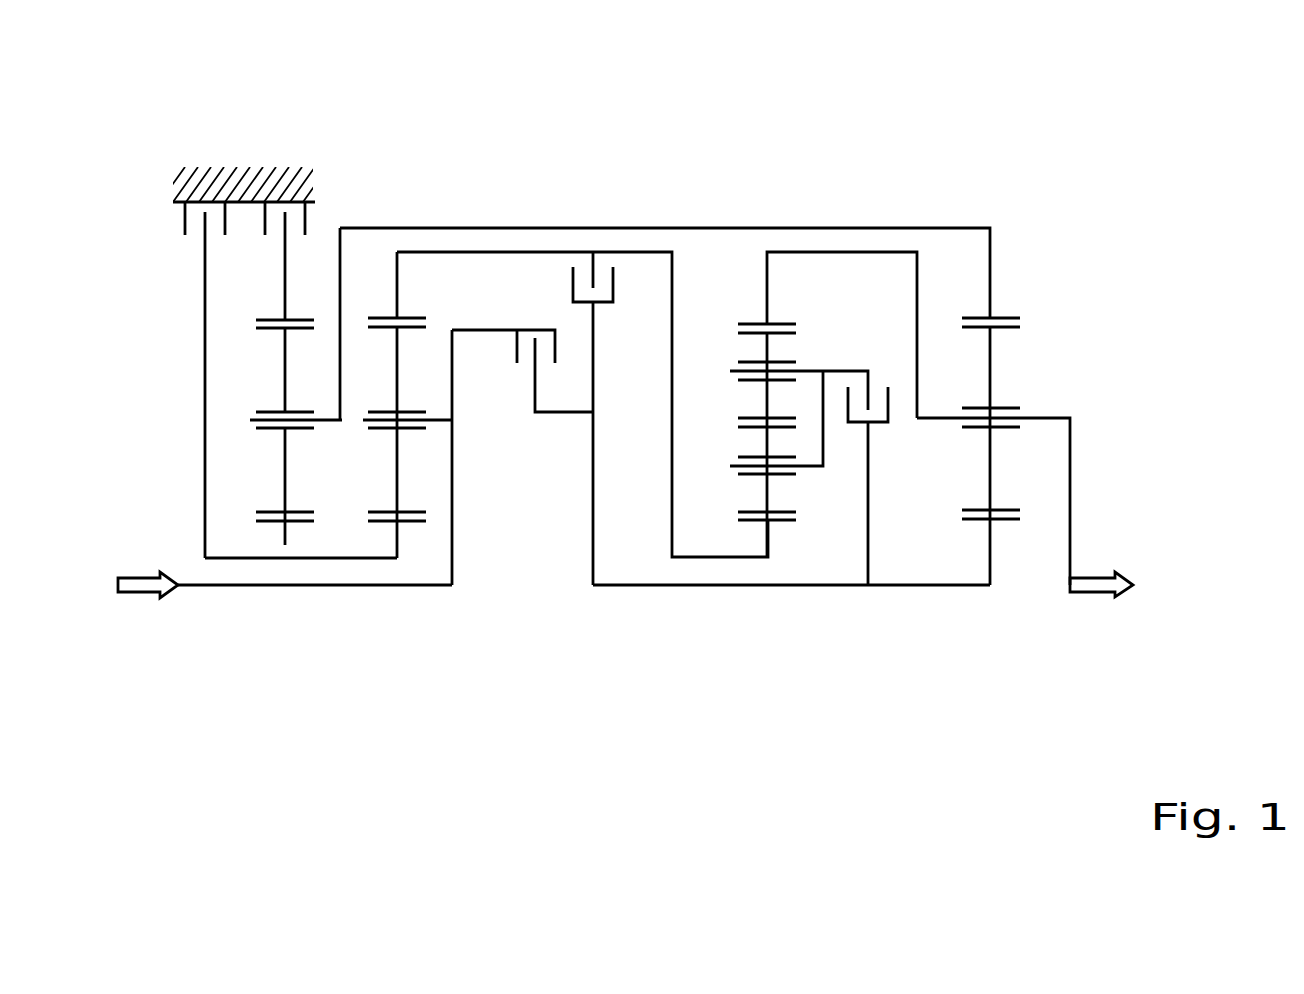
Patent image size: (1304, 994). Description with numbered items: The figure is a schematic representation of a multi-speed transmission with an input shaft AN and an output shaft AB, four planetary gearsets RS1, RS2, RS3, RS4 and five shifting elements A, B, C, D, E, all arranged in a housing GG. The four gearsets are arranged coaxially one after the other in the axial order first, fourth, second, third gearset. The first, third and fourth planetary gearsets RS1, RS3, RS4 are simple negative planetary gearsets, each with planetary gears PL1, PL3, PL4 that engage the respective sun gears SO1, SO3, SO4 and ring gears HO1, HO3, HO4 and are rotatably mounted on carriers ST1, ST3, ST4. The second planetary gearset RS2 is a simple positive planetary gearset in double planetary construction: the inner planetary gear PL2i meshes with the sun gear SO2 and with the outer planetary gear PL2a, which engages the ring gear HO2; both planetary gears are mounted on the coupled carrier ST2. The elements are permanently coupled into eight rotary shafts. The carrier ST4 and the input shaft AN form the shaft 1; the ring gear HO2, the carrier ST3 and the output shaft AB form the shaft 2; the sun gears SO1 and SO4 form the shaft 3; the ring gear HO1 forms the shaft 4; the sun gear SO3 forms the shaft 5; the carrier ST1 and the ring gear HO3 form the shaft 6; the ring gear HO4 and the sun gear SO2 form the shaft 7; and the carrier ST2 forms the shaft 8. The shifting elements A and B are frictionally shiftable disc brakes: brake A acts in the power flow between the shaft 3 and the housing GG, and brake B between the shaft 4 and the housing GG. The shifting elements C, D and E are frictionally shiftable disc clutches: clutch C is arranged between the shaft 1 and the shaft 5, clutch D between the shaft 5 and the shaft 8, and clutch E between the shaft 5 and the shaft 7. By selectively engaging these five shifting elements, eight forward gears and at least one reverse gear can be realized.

The housing GG is at (240, 178).
The brake A is at (180, 247).
The brake B is at (269, 246).
The clutch C is at (546, 365).
The clutch D is at (877, 387).
The clutch E is at (607, 310).
The ring gear of first planetary gearset HO1 is at (285, 290).
The ring gear of second planetary gearset HO2 is at (767, 317).
The ring gear of third planetary gearset HO3 is at (990, 292).
The ring gear of fourth planetary gearset HO4 is at (397, 292).
The planetary gear of first planetary gearset PL1 is at (283, 373).
The outer planetary gear of second planetary gearset PL2a is at (763, 343).
The inner planetary gear of second planetary gearset PL2i is at (770, 490).
The planetary gear of third planetary gearset PL3 is at (993, 372).
The planetary gear of fourth planetary gearset PL4 is at (400, 367).
The carrier of first planetary gearset ST1 is at (253, 420).
The carrier of second planetary gearset ST2 is at (807, 368).
The carrier of third planetary gearset ST3 is at (1037, 417).
The carrier of fourth planetary gearset ST4 is at (437, 418).
The sun gear of first planetary gearset SO1 is at (287, 545).
The sun gear of second planetary gearset SO2 is at (768, 538).
The sun gear of third planetary gearset SO3 is at (993, 547).
The sun gear of fourth planetary gearset SO4 is at (400, 545).
The first planetary gearset RS1 is at (299, 441).
The second planetary gearset RS2 is at (739, 486).
The third planetary gearset RS3 is at (1008, 442).
The fourth planetary gearset RS4 is at (381, 438).
The input shaft AN is at (140, 598).
The output shaft AB is at (1073, 597).
The first shaft 1 is at (457, 515).
The second shaft 2 is at (915, 252).
The third shaft 3 is at (300, 560).
The fourth shaft 4 is at (283, 283).
The fifth shaft 5 is at (945, 587).
The sixth shaft 6 is at (532, 228).
The seventh shaft 7 is at (563, 250).
The eighth shaft 8 is at (810, 465).